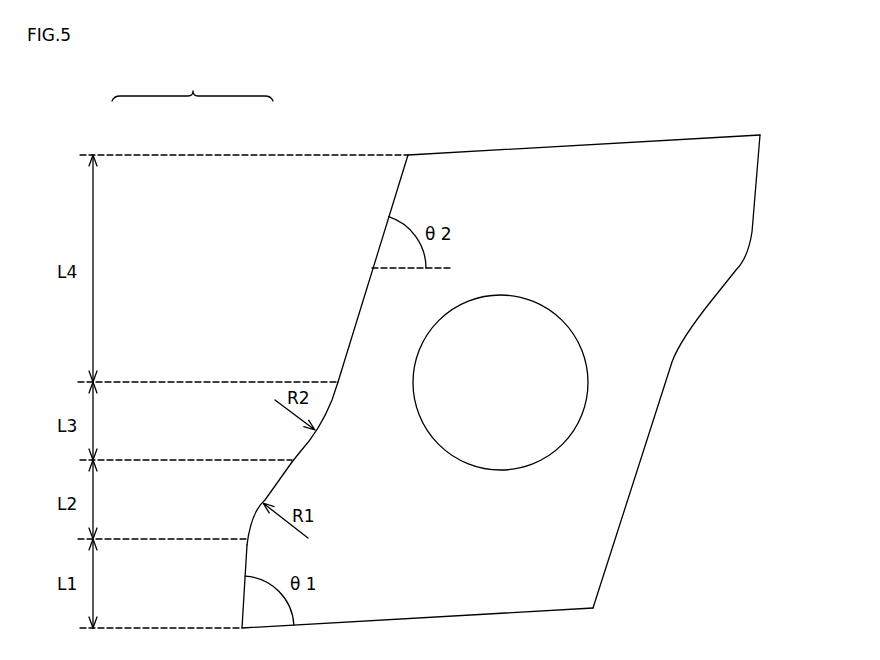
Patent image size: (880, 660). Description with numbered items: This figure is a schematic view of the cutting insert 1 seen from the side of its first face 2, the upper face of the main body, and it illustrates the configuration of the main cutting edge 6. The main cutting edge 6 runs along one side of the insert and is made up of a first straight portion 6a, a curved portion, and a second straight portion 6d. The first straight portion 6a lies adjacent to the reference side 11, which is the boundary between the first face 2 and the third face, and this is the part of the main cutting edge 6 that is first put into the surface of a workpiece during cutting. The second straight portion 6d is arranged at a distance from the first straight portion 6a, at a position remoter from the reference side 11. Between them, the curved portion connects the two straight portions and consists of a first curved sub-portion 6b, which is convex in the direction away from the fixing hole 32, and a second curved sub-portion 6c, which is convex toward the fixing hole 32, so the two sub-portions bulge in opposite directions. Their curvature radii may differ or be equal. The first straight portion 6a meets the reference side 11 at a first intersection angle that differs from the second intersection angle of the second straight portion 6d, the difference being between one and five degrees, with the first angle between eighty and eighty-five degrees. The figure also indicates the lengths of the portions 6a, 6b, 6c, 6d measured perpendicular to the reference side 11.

The cutting insert 1 is at (719, 85).
The first face 2 is at (567, 170).
The main cutting edge 6 is at (724, 356).
The first straight portion 6a is at (214, 573).
The first curved sub-portion 6b is at (223, 487).
The second curved sub-portion 6c is at (261, 419).
The second straight portion 6d is at (331, 258).
The reference side 11 is at (488, 616).
The fixing hole 32 is at (587, 377).